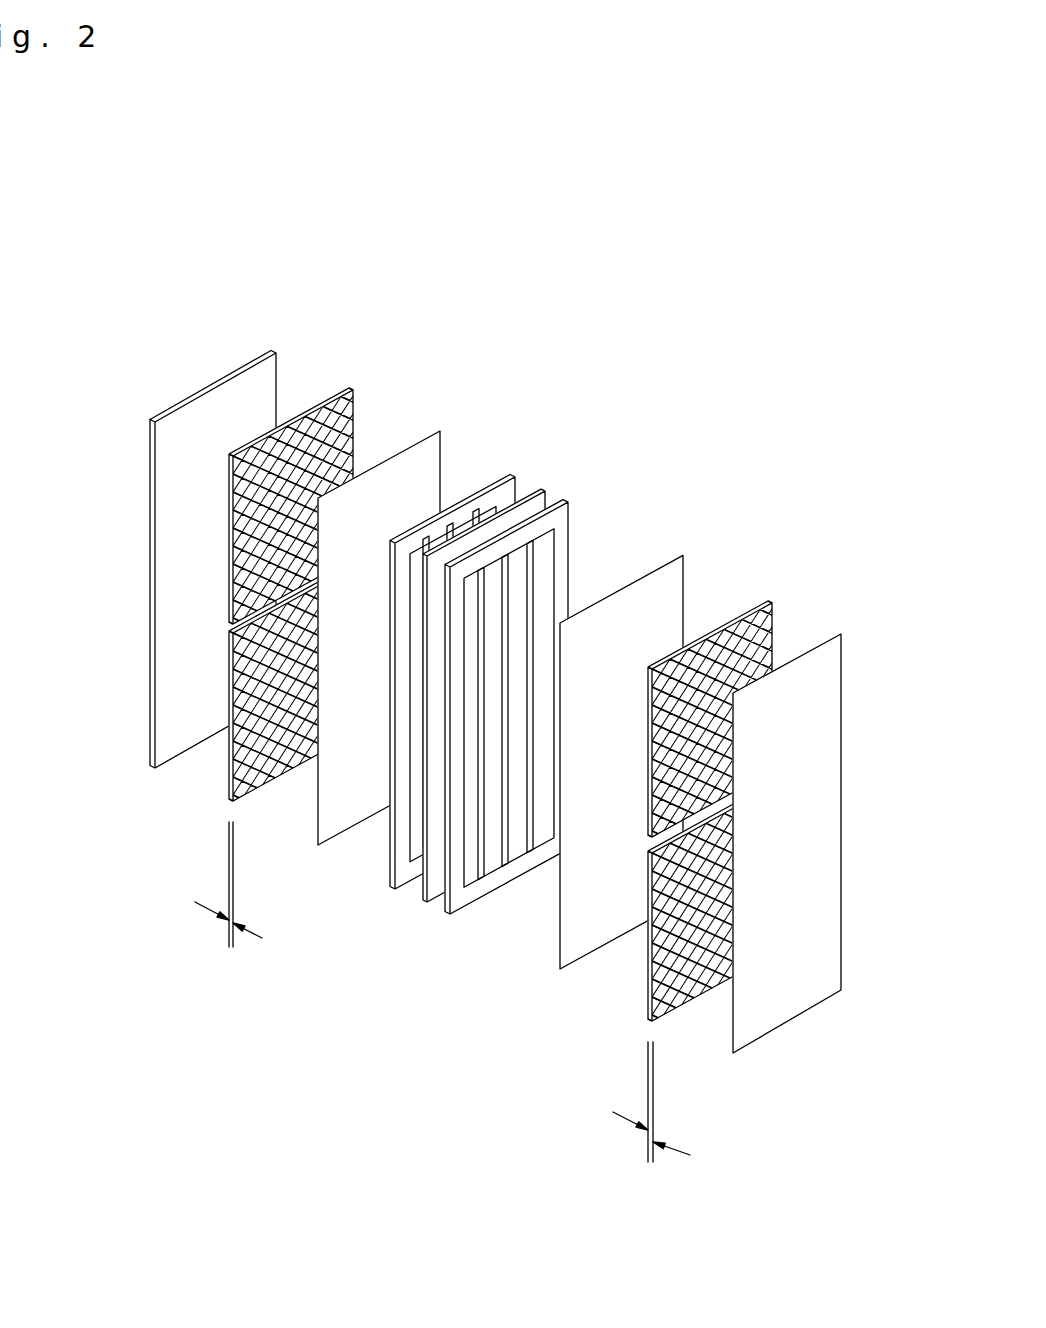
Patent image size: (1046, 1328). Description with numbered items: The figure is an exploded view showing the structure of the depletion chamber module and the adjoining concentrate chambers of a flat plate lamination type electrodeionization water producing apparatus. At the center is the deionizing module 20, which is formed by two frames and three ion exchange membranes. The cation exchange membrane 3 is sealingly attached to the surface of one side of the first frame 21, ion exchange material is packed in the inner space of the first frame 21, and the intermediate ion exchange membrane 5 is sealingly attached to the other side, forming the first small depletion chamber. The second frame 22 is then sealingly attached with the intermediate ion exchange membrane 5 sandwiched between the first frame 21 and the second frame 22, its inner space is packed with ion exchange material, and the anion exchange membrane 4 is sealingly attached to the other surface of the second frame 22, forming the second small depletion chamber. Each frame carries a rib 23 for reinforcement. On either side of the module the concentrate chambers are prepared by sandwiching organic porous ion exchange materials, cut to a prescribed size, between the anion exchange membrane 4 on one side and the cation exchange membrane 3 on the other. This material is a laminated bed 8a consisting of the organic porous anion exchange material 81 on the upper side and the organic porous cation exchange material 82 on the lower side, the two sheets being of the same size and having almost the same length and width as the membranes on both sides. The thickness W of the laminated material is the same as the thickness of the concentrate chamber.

The cation exchange membrane 3 is at (427, 437).
The anion exchange membrane 4 is at (248, 369).
The intermediate ion exchange membrane 5 is at (545, 492).
The deionizing module 20 is at (438, 341).
The first frame 21 is at (515, 476).
The second frame 22 is at (570, 514).
The rib 23 is at (476, 511).
The organic porous anion exchange material 81 is at (243, 590).
The organic porous cation exchange material 82 is at (231, 775).
The laminated bed 8a is at (72, 760).
The thickness W is at (231, 947).